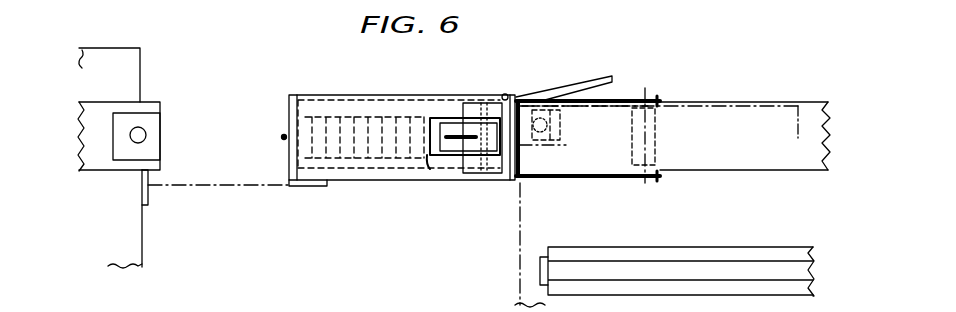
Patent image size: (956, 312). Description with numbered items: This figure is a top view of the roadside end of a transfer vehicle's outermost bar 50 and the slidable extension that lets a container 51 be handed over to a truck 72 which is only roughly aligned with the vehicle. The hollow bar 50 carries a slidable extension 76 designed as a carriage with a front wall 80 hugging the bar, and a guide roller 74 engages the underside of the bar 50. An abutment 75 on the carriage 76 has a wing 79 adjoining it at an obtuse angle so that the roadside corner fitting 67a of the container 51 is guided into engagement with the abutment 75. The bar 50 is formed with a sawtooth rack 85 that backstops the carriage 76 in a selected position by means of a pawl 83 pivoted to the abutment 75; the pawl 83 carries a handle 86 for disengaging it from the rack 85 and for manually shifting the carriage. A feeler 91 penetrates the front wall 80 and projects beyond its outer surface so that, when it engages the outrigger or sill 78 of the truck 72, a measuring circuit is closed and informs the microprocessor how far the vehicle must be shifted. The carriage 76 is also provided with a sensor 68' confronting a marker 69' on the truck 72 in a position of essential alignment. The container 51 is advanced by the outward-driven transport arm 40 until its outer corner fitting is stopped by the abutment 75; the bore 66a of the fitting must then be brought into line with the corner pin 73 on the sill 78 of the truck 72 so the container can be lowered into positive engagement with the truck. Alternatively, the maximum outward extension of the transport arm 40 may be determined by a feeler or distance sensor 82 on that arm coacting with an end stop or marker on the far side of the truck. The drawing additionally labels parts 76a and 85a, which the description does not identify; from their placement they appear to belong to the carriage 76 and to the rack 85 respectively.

The transport arm 40 is at (683, 256).
The outermost bar 50 is at (750, 115).
The container 51 is at (698, 102).
The bore 66a is at (553, 158).
The roadside corner fitting 67a is at (562, 112).
The sensor 68' is at (305, 200).
The marker 69' is at (118, 194).
The truck 72 is at (136, 252).
The corner pin 73 is at (146, 135).
The guide roller 74 is at (655, 140).
The abutment 75 is at (510, 94).
The slidable extension 76 is at (398, 82).
The sleeve 76a is at (598, 178).
The sill 78 is at (154, 100).
The wing 79 is at (573, 82).
The front wall 80 is at (289, 100).
The distance sensor 82 is at (540, 270).
The pawl 83 is at (457, 118).
The sawtooth rack 85 is at (350, 122).
The spring end 85a is at (430, 160).
The handle 86 is at (455, 165).
The feeler 91 is at (283, 139).